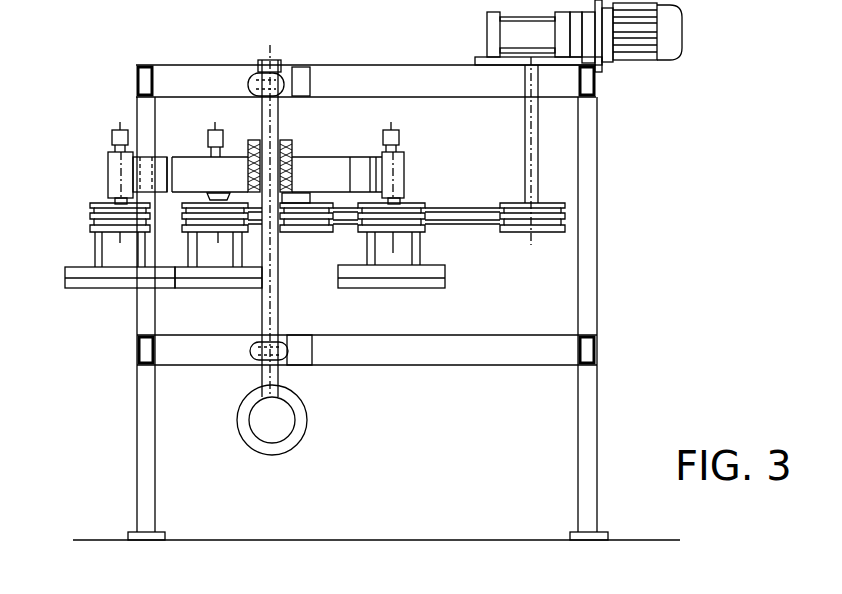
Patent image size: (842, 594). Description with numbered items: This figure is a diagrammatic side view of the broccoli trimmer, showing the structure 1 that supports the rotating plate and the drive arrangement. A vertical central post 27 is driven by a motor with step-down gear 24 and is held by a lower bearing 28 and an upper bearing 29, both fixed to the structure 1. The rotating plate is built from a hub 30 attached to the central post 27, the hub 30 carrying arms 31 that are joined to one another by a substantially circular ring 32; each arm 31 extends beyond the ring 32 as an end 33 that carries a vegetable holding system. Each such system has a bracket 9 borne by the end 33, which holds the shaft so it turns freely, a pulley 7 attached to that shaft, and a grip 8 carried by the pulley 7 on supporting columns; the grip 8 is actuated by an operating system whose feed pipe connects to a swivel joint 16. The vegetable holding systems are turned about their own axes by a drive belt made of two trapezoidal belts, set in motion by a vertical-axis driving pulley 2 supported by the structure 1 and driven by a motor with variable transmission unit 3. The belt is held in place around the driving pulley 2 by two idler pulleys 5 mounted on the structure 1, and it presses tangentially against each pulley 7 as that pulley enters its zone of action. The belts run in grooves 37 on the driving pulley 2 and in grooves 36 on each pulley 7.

The structure 1 is at (399, 60).
The driving pulley 2 is at (553, 202).
The motor with variable transmission unit 3 is at (637, 52).
The idler pulleys 5 is at (308, 233).
The pulley 7 is at (263, 217).
The grip 8 is at (78, 286).
The bracket 9 is at (107, 172).
The swivel joint 16 is at (112, 137).
The motor with step-down gear 24 is at (284, 421).
The central post 27 is at (260, 117).
The lower bearing 28 is at (257, 362).
The upper bearing 29 is at (279, 81).
The hub 30 is at (290, 157).
The arms 31 is at (337, 167).
The ring 32 is at (170, 157).
The end 33 is at (145, 157).
The grooves 36 is at (93, 223).
The grooves 37 is at (523, 222).